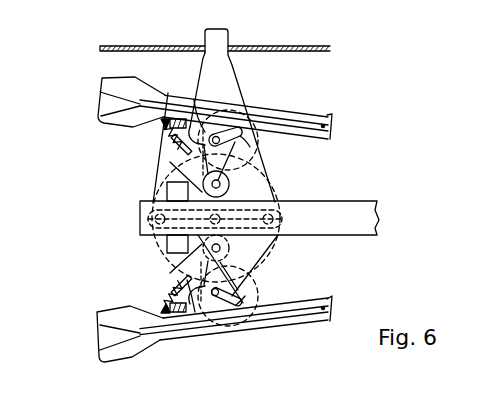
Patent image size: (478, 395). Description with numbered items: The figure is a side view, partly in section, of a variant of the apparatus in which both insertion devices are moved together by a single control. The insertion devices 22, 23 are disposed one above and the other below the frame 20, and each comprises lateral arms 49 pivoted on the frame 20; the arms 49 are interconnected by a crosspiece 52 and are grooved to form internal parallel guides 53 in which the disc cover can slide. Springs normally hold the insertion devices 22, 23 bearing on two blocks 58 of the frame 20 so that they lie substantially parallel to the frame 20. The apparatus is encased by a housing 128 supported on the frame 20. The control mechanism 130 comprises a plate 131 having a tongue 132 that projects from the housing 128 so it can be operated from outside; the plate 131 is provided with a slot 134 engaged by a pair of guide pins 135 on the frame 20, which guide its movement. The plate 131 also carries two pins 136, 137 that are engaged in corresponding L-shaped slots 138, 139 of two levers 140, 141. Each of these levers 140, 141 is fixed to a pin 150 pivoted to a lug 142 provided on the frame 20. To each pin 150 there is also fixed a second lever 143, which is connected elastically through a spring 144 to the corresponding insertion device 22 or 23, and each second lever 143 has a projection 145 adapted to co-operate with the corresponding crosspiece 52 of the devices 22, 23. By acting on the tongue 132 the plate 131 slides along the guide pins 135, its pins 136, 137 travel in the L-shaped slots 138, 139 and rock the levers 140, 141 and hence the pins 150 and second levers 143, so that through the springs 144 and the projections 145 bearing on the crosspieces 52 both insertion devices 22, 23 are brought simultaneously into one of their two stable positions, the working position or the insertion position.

The frame 20 is at (340, 228).
The insertion device 22 is at (95, 98).
The insertion device 23 is at (110, 303).
The lateral arm 49 is at (282, 115).
The crosspiece 52 is at (173, 115).
The guide 53 is at (330, 116).
The block 58 is at (166, 189).
The housing 128 is at (100, 47).
The control mechanism 130 is at (236, 39).
The plate 131 is at (222, 77).
The tongue 132 is at (205, 38).
The slot 134 is at (288, 201).
The guide pin 135 is at (147, 229).
The pin 136 is at (223, 142).
The pin 137 is at (223, 293).
The L-shaped slot 138 is at (251, 141).
The L-shaped slot 139 is at (245, 302).
The lever 140 is at (244, 148).
The lever 141 is at (247, 283).
The lug 142 is at (229, 186).
The second lever 143 is at (170, 162).
The spring 144 is at (163, 141).
The projection 145 is at (194, 100).
The pin 150 is at (200, 157).